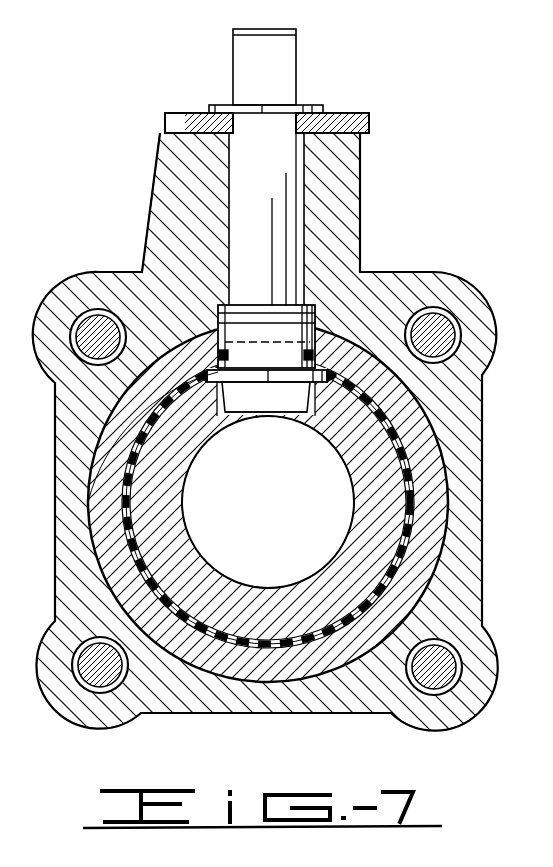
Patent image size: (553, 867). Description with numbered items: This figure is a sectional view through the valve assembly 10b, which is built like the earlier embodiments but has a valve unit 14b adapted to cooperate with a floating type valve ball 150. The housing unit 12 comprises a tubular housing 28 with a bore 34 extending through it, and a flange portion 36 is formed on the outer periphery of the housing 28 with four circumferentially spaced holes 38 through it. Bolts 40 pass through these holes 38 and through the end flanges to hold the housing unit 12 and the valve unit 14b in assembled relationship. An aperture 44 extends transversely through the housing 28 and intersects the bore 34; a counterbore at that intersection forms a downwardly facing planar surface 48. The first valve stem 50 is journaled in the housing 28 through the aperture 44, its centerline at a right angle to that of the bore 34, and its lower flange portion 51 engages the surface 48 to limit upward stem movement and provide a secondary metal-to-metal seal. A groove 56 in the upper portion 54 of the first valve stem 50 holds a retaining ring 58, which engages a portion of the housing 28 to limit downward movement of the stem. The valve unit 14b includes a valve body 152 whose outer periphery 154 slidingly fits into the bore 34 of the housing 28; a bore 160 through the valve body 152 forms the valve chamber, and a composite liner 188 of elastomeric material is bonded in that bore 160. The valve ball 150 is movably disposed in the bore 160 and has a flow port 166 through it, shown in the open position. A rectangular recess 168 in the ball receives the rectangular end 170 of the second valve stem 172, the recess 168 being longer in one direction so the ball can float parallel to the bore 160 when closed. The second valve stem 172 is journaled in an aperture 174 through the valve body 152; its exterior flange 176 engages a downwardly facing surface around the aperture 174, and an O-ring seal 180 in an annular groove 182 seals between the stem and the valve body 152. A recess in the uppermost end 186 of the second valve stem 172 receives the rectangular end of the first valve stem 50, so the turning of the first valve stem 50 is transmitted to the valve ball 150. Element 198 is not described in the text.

The valve assembly 10b is at (343, 94).
The housing unit 12 is at (362, 149).
The valve unit 14b is at (447, 423).
The tubular housing 28 is at (343, 186).
The bore 34 is at (352, 652).
The flange portion 36 is at (107, 283).
The holes 38 is at (88, 320).
The bolts 40 is at (90, 345).
The aperture 44 is at (233, 182).
The downwardly facing planar surface 48 is at (220, 306).
The first valve stem 50 is at (247, 147).
The lower flange portion 51 is at (253, 317).
The upper portion 54 is at (282, 52).
The groove 56 is at (263, 105).
The retaining ring 58 is at (220, 105).
The valve ball 150 is at (158, 507).
The valve body 152 is at (125, 600).
The outer periphery 154 is at (448, 486).
The bore 160 is at (231, 640).
The flow port 166 is at (195, 544).
The rectangular recess 168 is at (222, 422).
The rectangular end 170 is at (288, 402).
The second valve stem 172 is at (217, 323).
The aperture 174 is at (318, 330).
The exterior flange 176 is at (328, 396).
The O-ring seal 180 is at (313, 355).
The annular groove 182 is at (221, 401).
The uppermost end 186 is at (318, 310).
The composite liner 188 is at (262, 645).
The collar tip 198 is at (336, 374).